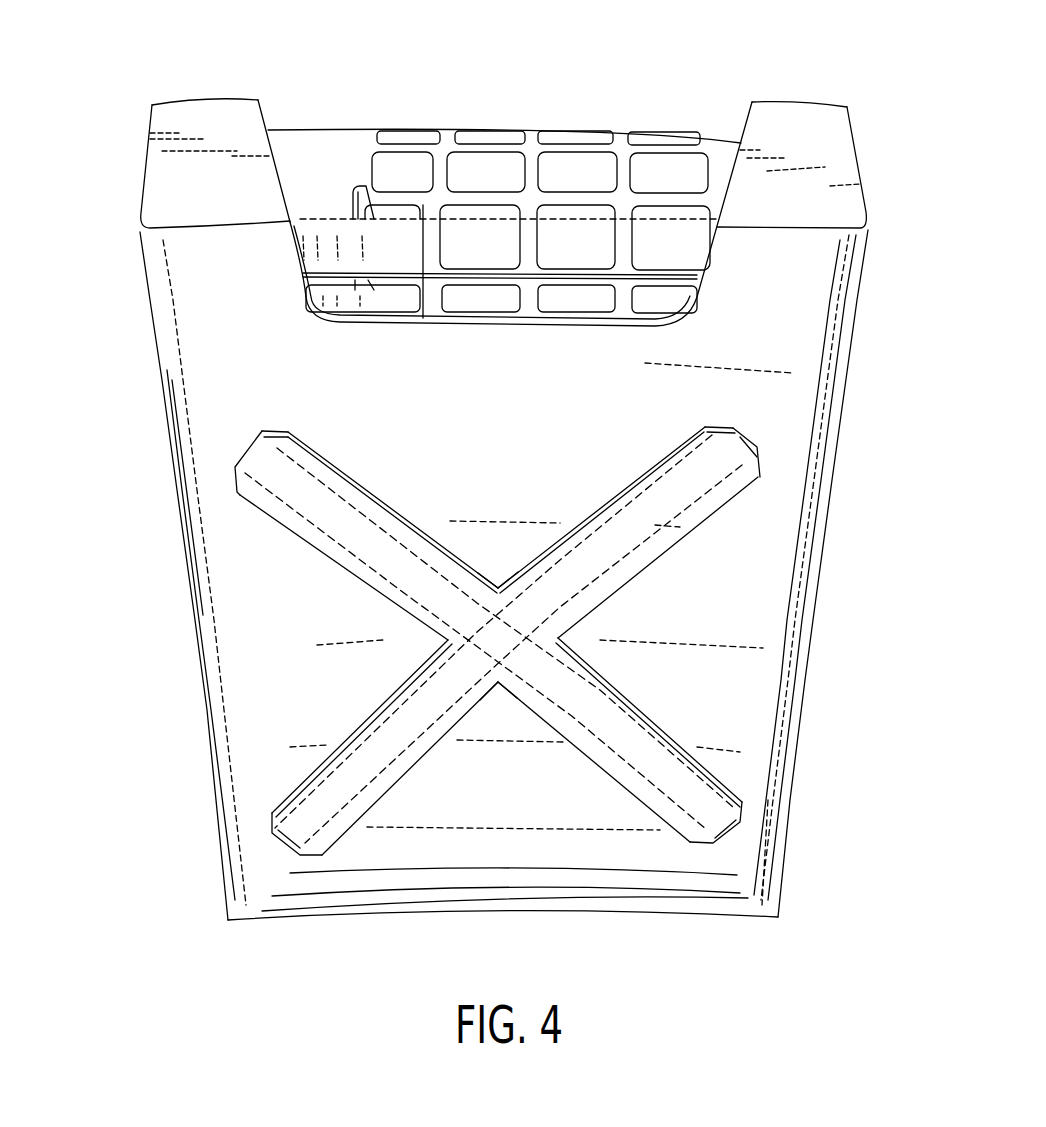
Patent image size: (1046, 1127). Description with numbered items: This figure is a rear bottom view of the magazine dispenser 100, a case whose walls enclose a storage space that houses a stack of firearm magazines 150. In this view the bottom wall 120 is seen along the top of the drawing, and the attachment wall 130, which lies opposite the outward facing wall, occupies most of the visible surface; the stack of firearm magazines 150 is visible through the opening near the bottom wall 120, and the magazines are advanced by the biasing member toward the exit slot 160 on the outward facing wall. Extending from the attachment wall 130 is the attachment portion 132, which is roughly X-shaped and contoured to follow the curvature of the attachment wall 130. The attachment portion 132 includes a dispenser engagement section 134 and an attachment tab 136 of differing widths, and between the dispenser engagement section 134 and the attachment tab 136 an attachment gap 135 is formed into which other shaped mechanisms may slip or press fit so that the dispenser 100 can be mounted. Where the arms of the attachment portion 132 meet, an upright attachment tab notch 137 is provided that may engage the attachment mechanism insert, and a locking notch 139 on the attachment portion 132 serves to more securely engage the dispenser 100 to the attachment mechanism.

The dispenser 100 is at (178, 490).
The bottom wall 120 is at (817, 146).
The attachment wall 130 is at (285, 631).
The attachment portion 132 is at (728, 497).
The dispenser engagement section 134 is at (250, 445).
The attachment gap 135 is at (716, 422).
The attachment tab 136 is at (277, 518).
The upright attachment tab notch 137 is at (497, 588).
The locking notch 139 is at (498, 683).
The stack of firearm magazines 150 is at (482, 165).
The exit slot 160 is at (727, 178).